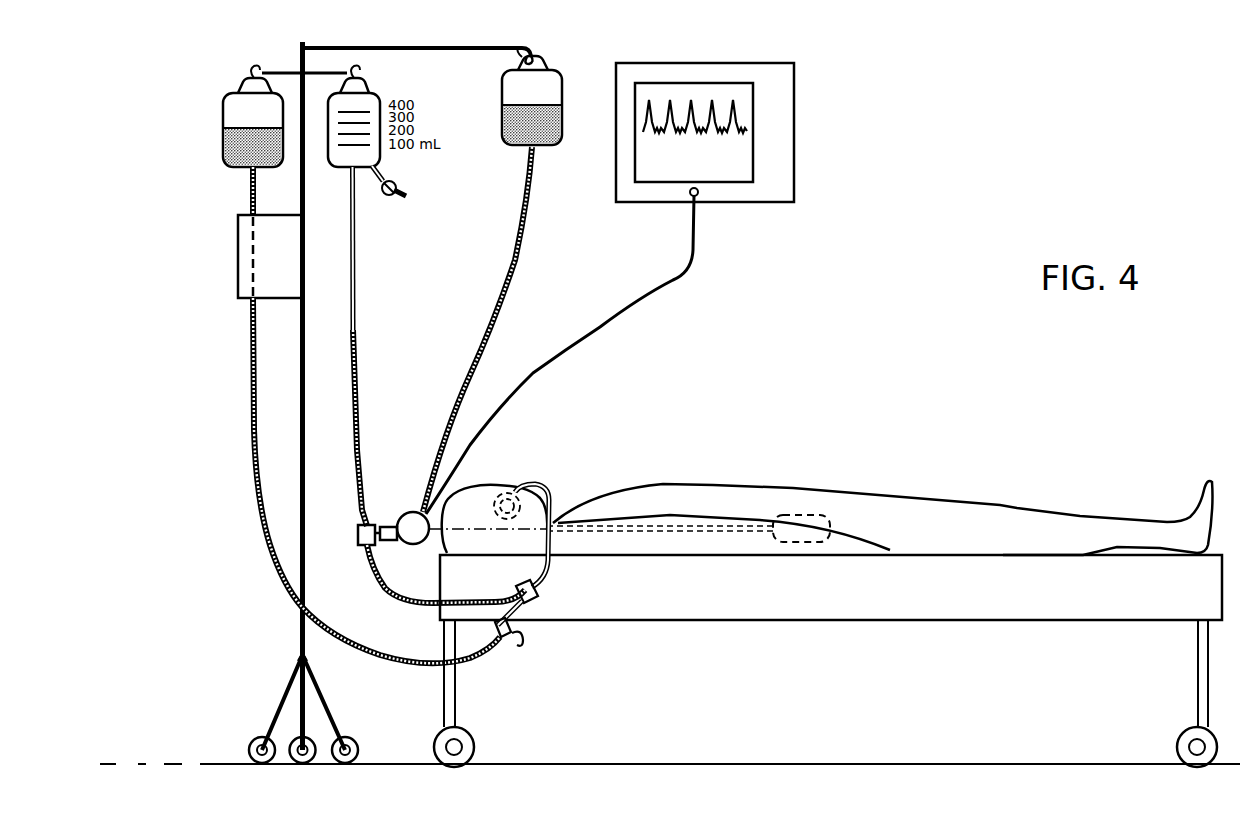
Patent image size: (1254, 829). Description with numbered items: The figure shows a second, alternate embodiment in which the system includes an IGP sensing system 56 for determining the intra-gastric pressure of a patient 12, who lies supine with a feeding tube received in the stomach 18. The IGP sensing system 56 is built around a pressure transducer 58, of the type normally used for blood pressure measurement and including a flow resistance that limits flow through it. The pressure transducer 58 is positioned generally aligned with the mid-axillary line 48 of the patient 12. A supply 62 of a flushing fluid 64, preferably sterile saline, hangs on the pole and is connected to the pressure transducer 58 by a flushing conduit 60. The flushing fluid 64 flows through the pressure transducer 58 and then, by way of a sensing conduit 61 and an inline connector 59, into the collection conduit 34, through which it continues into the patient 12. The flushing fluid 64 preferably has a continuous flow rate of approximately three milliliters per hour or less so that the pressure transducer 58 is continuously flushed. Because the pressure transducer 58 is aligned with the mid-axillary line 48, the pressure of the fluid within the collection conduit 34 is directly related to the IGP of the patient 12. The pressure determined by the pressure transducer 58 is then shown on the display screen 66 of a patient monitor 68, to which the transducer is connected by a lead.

The patient 12 is at (720, 485).
The stomach 18 is at (807, 513).
The collection conduit 34 is at (378, 580).
The mid-axillary line 48 is at (472, 530).
The IGP sensing system 56 is at (552, 287).
The pressure transducer 58 is at (403, 516).
The inline connector 59 is at (358, 532).
The flushing conduit 60 is at (497, 288).
The sensing conduit 61 is at (386, 543).
The supply 62 is at (558, 72).
The flushing fluid 64 is at (561, 142).
The display screen 66 is at (693, 83).
The patient monitor 68 is at (794, 124).